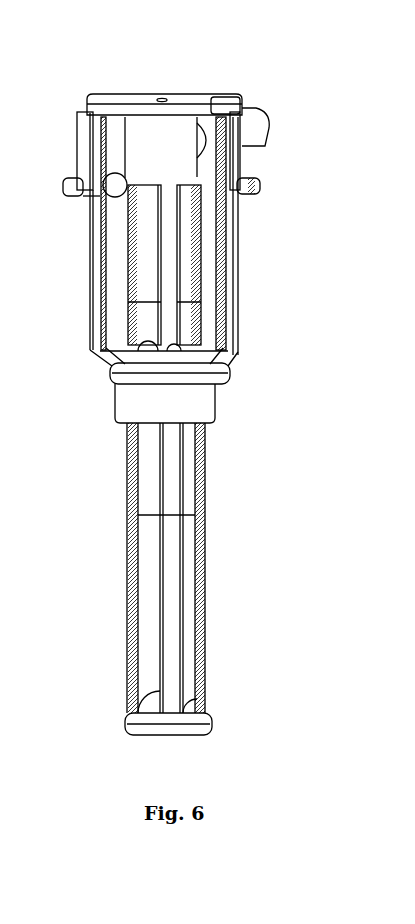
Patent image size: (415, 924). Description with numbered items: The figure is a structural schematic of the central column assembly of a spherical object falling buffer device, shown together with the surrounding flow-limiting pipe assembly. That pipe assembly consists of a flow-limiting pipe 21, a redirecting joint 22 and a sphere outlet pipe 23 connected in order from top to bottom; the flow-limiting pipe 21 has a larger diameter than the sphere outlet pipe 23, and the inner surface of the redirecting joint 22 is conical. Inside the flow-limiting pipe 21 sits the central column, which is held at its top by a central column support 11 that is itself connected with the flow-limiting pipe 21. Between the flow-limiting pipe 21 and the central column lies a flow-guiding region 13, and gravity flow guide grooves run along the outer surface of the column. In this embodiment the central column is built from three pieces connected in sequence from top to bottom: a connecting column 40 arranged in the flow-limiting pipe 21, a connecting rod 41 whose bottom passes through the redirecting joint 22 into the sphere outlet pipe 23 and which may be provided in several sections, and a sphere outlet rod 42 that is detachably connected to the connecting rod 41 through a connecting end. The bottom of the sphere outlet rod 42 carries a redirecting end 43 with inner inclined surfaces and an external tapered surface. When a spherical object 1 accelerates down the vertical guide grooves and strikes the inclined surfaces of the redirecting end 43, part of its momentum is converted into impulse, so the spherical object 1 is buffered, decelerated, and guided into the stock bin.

The spherical object 1 is at (112, 190).
The central column support 11 is at (215, 106).
The flow-guiding region 13 is at (120, 237).
The flow-limiting pipe 21 is at (233, 281).
The redirecting joint 22 is at (225, 362).
The sphere outlet pipe 23 is at (198, 410).
The connecting column 40 is at (190, 178).
The connecting rod 41 is at (192, 478).
The sphere outlet rod 42 is at (192, 590).
The redirecting end 43 is at (193, 710).